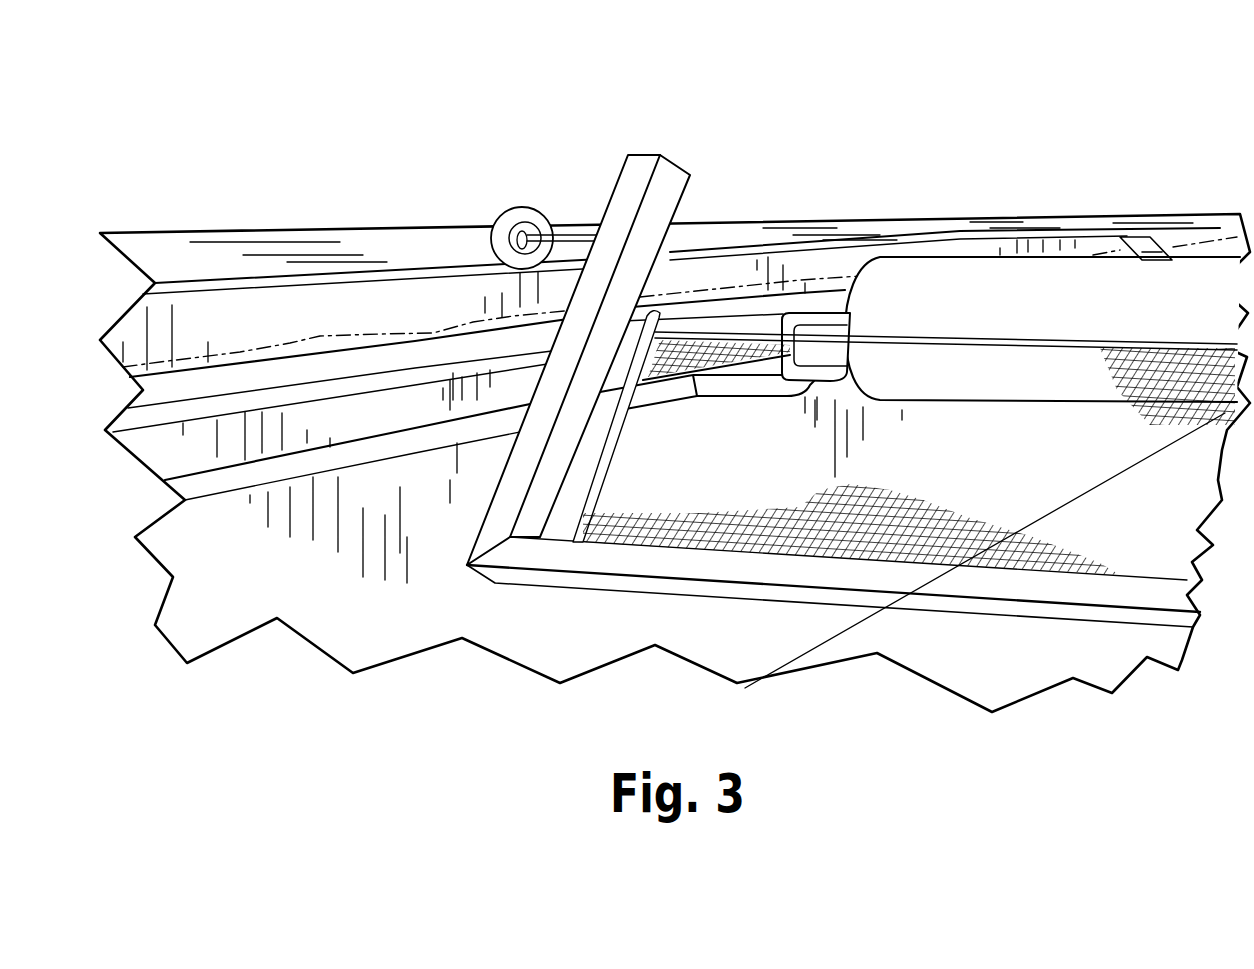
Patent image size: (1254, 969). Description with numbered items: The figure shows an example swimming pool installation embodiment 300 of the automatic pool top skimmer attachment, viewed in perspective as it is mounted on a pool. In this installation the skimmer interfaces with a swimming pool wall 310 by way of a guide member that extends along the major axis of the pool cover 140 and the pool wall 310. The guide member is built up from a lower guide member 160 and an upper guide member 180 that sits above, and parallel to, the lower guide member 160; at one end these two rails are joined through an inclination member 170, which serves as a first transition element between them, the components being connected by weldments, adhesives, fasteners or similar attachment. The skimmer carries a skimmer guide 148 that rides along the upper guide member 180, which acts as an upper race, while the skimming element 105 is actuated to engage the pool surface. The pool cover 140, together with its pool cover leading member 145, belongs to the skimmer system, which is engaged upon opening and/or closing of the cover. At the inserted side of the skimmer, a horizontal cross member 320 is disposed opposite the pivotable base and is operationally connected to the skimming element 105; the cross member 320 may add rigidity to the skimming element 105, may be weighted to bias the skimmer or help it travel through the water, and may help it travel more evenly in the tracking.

The pool installation embodiment 300 is at (546, 76).
The swimming pool wall 310 is at (427, 228).
The upper guide member 180 is at (223, 282).
The lower guide member 160 is at (297, 382).
The skimmer guide 148 is at (525, 208).
The pool cover 140 is at (965, 265).
The pool cover leading member 145 is at (843, 307).
The inclination member 170 is at (1140, 245).
The horizontal cross member 320 is at (1117, 592).
The skimming element 105 is at (1145, 347).